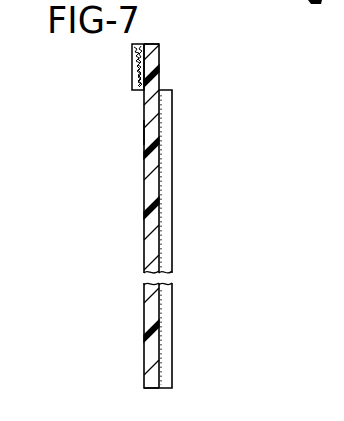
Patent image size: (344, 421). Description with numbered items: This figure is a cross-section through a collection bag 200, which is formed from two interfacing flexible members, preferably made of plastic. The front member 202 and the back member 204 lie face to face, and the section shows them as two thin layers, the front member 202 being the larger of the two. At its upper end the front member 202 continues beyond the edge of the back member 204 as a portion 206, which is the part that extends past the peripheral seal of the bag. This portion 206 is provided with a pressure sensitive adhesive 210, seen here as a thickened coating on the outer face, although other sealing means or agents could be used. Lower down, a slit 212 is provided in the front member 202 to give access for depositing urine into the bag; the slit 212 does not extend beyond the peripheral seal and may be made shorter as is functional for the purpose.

The collection bag 200 is at (197, 126).
The front member 202 is at (150, 243).
The back member 204 is at (172, 245).
The portion 206 is at (160, 56).
The pressure sensitive adhesive 210 is at (132, 63).
The slit 212 is at (144, 131).